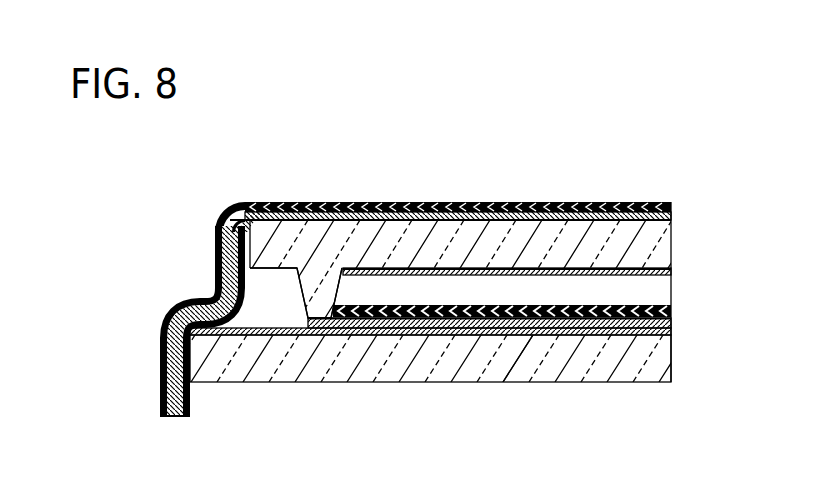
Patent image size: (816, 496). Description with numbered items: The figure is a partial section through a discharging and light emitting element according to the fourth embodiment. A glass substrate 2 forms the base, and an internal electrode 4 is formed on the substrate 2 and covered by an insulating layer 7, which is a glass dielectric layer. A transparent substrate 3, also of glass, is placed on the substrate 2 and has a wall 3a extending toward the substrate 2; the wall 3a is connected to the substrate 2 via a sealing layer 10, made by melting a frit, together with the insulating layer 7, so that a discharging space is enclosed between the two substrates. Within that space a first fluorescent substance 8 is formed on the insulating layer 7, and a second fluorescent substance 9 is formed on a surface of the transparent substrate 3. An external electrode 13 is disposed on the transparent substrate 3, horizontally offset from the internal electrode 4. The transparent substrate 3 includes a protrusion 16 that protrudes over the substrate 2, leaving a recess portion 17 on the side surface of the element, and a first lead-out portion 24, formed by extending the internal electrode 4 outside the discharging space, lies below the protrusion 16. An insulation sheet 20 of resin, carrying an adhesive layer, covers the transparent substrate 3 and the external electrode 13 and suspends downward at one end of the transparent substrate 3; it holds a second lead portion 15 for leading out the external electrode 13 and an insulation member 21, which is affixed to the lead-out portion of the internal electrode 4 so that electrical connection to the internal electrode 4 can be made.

The substrate 2 is at (663, 365).
The transparent substrate 3 is at (663, 239).
The wall 3a is at (302, 288).
The internal electrode 4 is at (507, 333).
The insulating layer 7 is at (663, 322).
The first fluorescent substance 8 is at (663, 313).
The second fluorescent substance 9 is at (663, 272).
The sealing layer 10 is at (311, 318).
The external electrode 13 is at (469, 210).
The second lead portion 15 is at (163, 360).
The protrusion 16 is at (268, 236).
The recess portion 17 is at (277, 300).
The insulation sheet 20 is at (542, 204).
The insulation member 21 is at (183, 420).
The first lead-out portion 24 is at (234, 337).